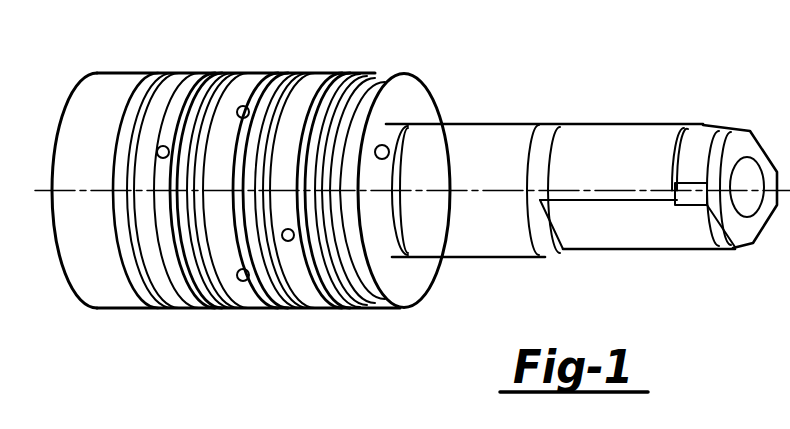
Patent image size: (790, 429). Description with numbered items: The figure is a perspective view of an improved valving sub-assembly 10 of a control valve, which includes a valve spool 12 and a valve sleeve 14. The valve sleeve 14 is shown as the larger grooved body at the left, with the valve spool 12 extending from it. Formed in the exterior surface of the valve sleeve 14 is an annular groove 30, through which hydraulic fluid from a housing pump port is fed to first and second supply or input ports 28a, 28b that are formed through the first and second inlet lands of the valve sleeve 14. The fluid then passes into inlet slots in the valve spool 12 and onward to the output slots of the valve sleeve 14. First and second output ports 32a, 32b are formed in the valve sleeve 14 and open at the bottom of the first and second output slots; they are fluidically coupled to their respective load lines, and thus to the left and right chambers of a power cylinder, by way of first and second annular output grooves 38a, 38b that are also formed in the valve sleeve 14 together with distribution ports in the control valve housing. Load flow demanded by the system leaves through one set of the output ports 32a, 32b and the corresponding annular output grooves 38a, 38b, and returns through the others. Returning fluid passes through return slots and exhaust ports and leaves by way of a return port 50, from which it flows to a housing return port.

The improved valving sub-assembly 10 is at (467, 77).
The valve spool 12 is at (500, 140).
The valve sleeve 14 is at (400, 105).
The first supply or input port 28a is at (243, 281).
The second supply or input port 28b is at (242, 106).
The annular groove 30 is at (273, 70).
The first output port 32a is at (292, 241).
The second output port 32b is at (162, 146).
The first annular output groove 38a is at (330, 73).
The second annular output groove 38b is at (165, 250).
The return port 50 is at (389, 146).